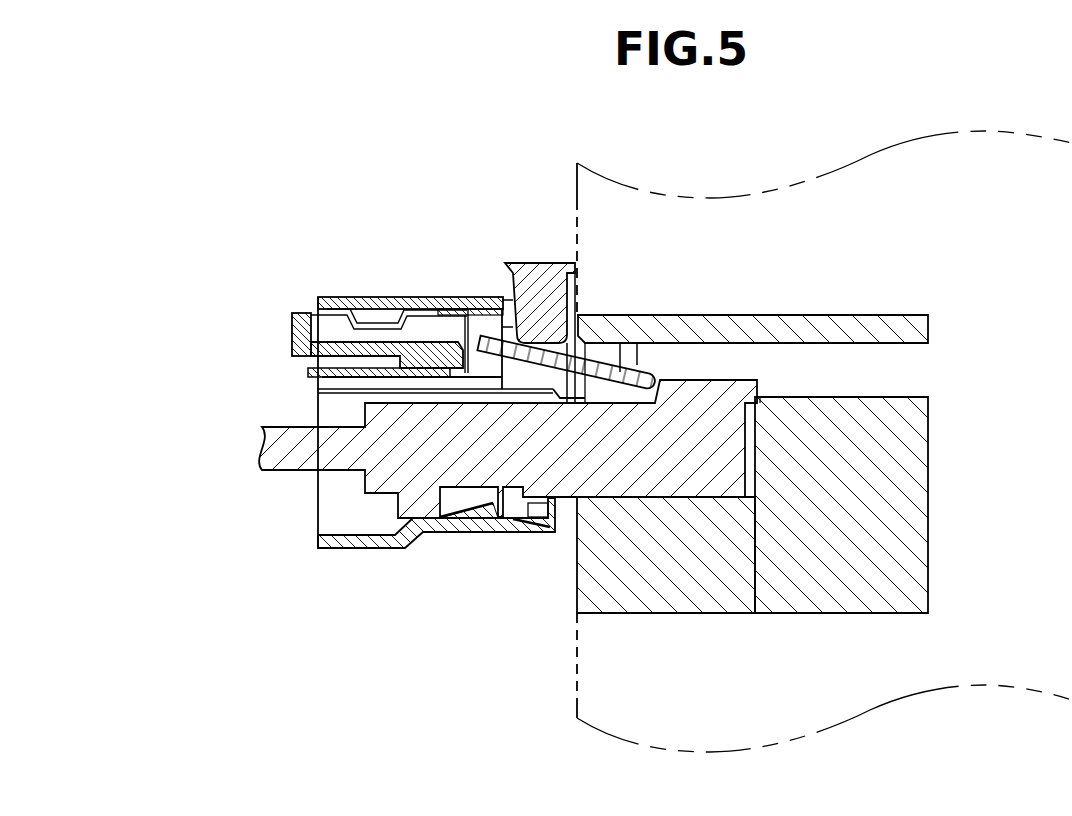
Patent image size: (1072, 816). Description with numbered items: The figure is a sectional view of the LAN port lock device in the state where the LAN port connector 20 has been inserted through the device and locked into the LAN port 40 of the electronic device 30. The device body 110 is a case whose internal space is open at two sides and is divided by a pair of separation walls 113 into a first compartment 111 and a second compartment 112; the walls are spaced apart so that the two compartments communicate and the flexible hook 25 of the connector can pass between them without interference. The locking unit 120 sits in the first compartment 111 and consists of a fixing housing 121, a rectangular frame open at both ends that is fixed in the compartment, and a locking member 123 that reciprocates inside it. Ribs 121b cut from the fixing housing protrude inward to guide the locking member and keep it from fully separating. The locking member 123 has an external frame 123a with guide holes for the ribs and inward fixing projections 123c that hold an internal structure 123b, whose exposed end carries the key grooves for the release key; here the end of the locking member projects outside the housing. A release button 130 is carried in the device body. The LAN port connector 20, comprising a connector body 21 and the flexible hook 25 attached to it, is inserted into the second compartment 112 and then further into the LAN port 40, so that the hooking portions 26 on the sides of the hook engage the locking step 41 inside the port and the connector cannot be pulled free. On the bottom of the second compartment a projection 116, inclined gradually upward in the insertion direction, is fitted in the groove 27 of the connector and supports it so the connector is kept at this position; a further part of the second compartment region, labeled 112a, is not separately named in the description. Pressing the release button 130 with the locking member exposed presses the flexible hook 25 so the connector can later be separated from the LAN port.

The LAN port connector 20 is at (254, 448).
The connector body 21 is at (637, 493).
The flexible hook 25 is at (533, 343).
The hooking portions 26 is at (637, 372).
The groove 27 is at (469, 493).
The electronic device 30 is at (577, 184).
The LAN port 40 is at (749, 358).
The locking step 41 is at (633, 345).
The device body 110 is at (528, 539).
The first compartment 111 is at (510, 327).
The second compartment 112 is at (327, 487).
The bottom plate 112a is at (352, 534).
The separation walls 113 is at (318, 389).
The projection 116 is at (470, 503).
The locking unit 120 is at (304, 307).
The fixing housing 121 is at (448, 308).
The ribs 121b is at (400, 309).
The locking member 123 is at (284, 315).
The external frame 123a is at (325, 300).
The internal structure 123b is at (318, 335).
The fixing projections 123c is at (308, 350).
The release button 130 is at (537, 268).